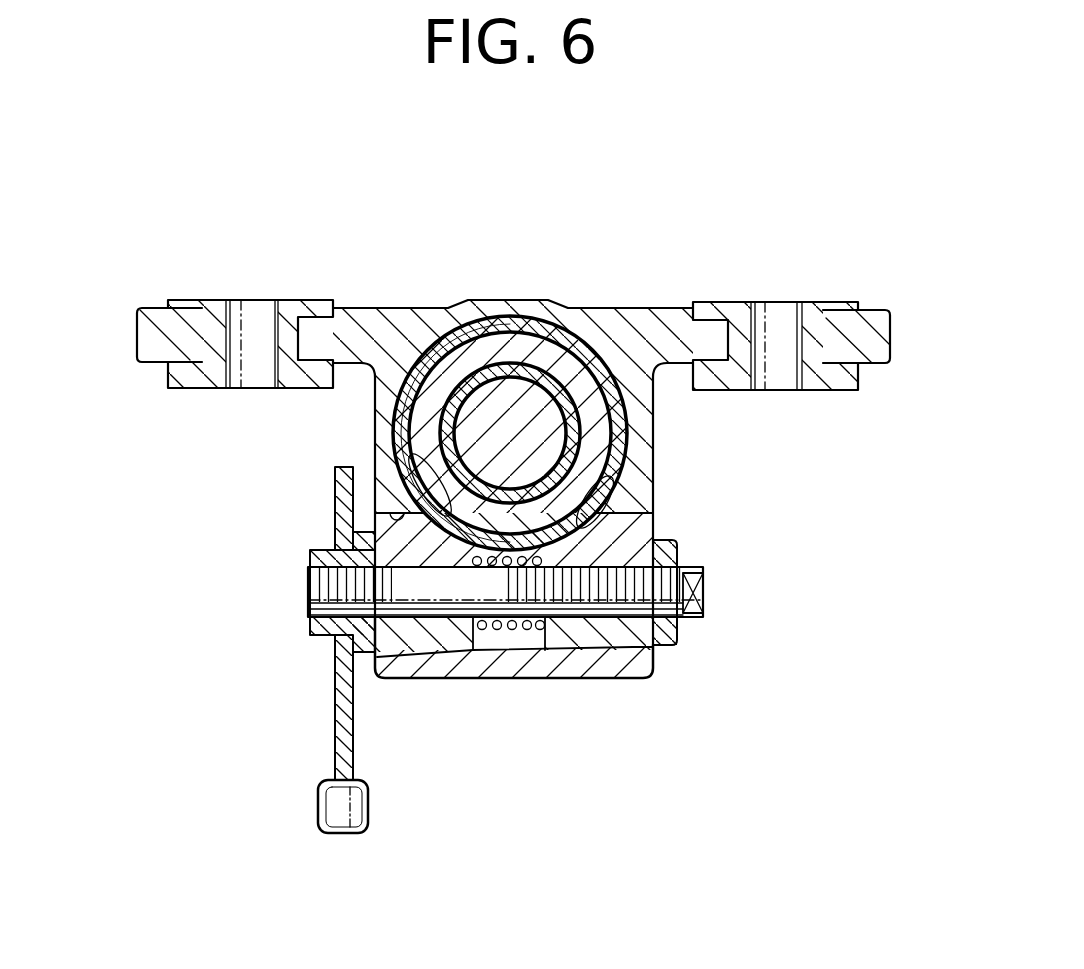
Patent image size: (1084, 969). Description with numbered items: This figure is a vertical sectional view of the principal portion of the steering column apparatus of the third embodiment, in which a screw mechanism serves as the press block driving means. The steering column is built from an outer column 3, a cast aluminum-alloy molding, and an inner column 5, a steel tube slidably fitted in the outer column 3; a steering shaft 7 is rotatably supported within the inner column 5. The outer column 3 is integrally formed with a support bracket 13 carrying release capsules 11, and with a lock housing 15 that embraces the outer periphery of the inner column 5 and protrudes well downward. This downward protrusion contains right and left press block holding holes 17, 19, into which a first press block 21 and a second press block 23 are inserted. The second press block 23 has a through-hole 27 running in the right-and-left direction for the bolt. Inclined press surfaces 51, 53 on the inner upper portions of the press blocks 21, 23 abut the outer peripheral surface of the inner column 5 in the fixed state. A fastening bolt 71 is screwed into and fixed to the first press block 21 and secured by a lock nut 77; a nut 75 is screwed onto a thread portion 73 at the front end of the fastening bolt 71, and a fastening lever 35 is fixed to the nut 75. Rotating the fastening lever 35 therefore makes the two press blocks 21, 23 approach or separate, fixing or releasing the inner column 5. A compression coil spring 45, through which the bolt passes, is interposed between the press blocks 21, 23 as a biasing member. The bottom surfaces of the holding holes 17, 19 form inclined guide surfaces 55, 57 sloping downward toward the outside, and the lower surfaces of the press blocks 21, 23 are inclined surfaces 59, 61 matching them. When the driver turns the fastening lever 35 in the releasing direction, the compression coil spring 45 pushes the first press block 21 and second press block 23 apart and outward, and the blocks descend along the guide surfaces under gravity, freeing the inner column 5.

The outer column 3 is at (598, 276).
The inner column 5 is at (497, 345).
The steering shaft 7 is at (522, 375).
The release capsules 11 is at (202, 300).
The support bracket 13 is at (153, 335).
The lock housing 15 is at (642, 492).
The press block holding hole 17 is at (652, 528).
The press block holding hole 19 is at (393, 513).
The first press block 21 is at (652, 653).
The second press block 23 is at (350, 543).
The through-hole 27 is at (473, 645).
The fastening lever 35 is at (340, 715).
The compression coil spring 45 is at (505, 645).
The inclined press surface 51 is at (645, 492).
The inclined press surface 53 is at (453, 512).
The inclined guide surface 55 is at (573, 645).
The inclined guide surface 57 is at (407, 683).
The inclined surface 59 is at (580, 650).
The inclined surface 61 is at (415, 650).
The fastening bolt 71 is at (707, 588).
The thread portion 73 is at (330, 583).
The nut 75 is at (307, 627).
The lock nut 77 is at (673, 640).